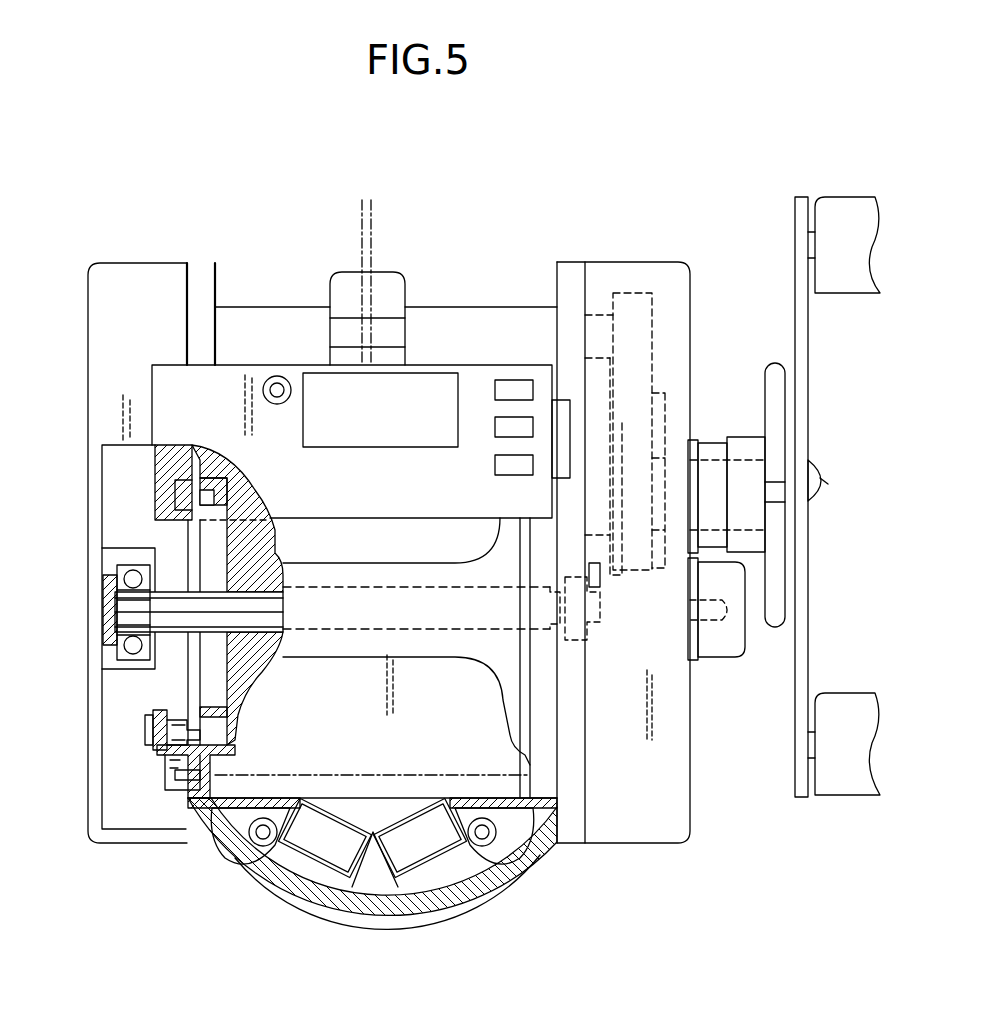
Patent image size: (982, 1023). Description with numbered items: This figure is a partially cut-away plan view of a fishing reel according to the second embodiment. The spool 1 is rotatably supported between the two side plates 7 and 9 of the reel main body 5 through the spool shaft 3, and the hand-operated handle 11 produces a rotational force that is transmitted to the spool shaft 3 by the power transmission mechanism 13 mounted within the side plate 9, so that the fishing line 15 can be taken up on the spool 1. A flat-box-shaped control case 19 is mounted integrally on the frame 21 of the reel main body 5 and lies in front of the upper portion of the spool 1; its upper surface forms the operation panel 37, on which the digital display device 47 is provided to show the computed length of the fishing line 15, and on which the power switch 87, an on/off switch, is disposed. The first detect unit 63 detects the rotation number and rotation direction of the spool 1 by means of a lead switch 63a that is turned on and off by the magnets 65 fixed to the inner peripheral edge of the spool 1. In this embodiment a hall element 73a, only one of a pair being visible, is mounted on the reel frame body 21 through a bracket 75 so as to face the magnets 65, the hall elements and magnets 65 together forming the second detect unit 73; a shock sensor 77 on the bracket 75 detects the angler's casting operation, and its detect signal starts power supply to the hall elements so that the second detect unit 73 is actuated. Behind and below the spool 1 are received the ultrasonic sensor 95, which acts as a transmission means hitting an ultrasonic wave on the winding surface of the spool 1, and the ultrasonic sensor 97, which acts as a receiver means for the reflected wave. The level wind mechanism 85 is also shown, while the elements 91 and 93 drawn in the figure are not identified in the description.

The spool 1 is at (515, 723).
The spool shaft 3 is at (170, 612).
The reel main body 5 is at (500, 318).
The side plate 7 is at (105, 275).
The side plate 9 is at (670, 727).
The hand-operated handle 11 is at (800, 621).
The power transmission mechanism 13 is at (648, 397).
The fishing line 15 is at (360, 245).
The control case 19 is at (160, 383).
The frame 21 is at (200, 275).
The operation panel 37 is at (235, 380).
The digital display device 47 is at (432, 385).
The first detect unit 63 is at (150, 481).
The lead switch 63a is at (185, 495).
The magnets 65 is at (200, 503).
The second detect unit 73 is at (111, 719).
The hall element 73a is at (175, 735).
The bracket 75 is at (160, 765).
The shock sensor 77 is at (150, 732).
The level wind mechanism 85 is at (392, 278).
The power switch 87 is at (277, 404).
The axis line 91 is at (470, 778).
The arc frame 93 is at (405, 892).
The ultrasonic sensor 95 is at (325, 825).
The ultrasonic sensor 97 is at (440, 850).